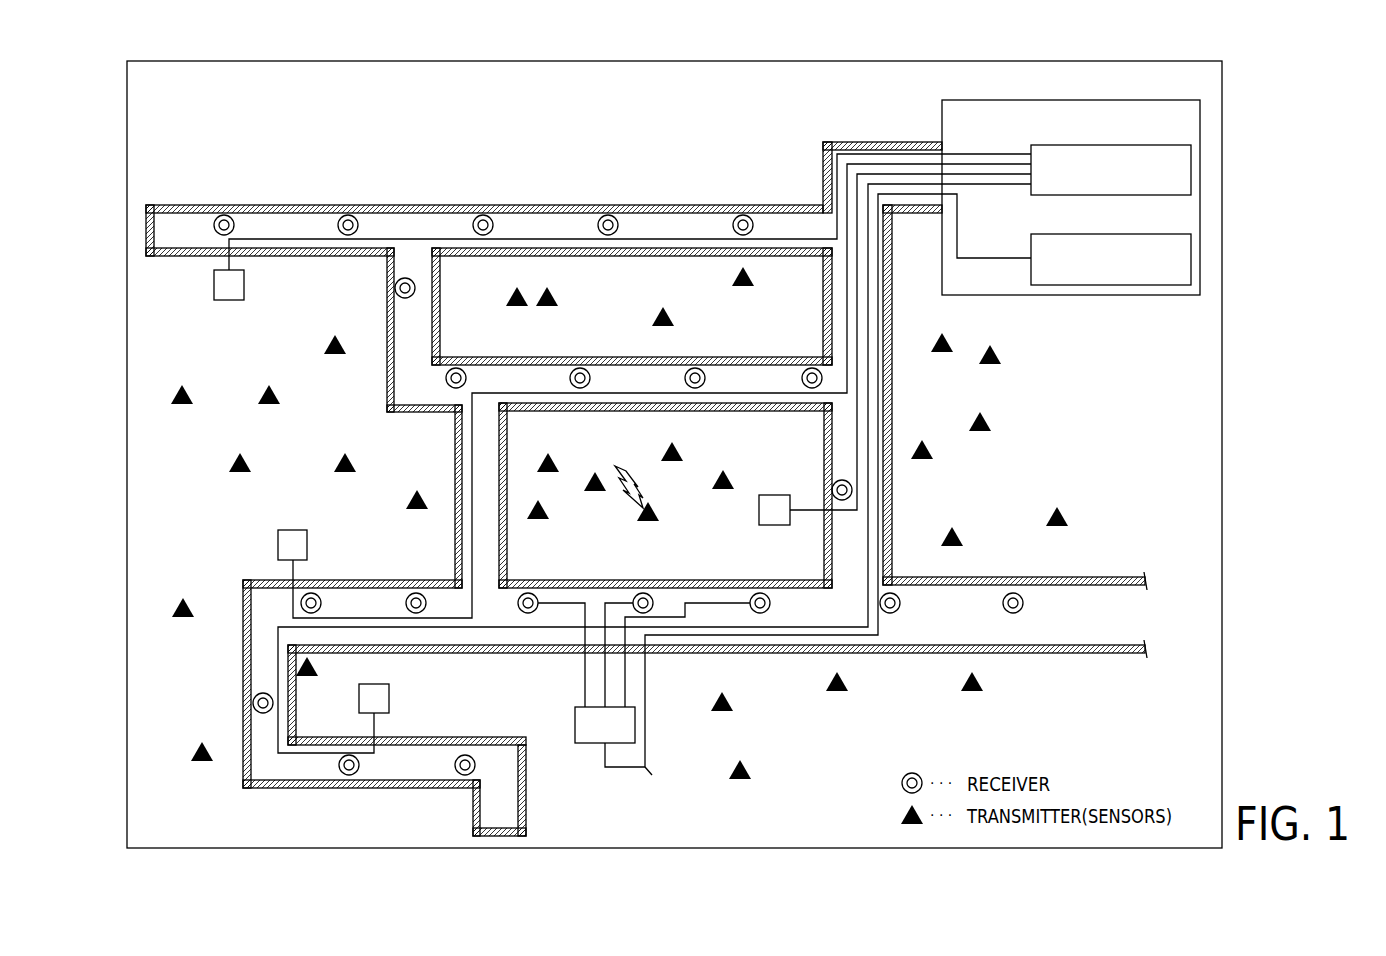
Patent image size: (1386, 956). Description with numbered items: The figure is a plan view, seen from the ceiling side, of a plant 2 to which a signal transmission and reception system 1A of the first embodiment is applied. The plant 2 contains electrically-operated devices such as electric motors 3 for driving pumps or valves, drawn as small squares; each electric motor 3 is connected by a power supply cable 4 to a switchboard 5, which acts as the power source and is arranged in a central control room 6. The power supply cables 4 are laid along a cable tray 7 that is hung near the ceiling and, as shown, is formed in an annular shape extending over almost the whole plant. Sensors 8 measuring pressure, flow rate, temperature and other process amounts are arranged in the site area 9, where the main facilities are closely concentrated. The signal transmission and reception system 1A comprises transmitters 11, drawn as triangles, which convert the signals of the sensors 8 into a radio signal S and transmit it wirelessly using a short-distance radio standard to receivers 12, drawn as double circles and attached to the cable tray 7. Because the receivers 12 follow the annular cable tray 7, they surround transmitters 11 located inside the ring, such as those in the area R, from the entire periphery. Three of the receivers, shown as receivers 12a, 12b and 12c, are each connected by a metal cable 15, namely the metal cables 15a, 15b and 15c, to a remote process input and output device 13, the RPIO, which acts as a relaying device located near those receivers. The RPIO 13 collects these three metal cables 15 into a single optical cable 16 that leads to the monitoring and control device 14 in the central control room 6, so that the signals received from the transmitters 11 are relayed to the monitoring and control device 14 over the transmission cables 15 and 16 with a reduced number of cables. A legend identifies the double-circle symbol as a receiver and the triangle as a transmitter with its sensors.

The signal transmission and reception system 1A is at (653, 776).
The plant 2 is at (1133, 61).
The electric motor 3 is at (244, 287).
The power supply cable 4 is at (963, 166).
The switchboard 5 is at (1133, 145).
The central control room 6 is at (1133, 100).
The cable tray 7 is at (430, 205).
The sensor 8 is at (668, 313).
The site area 9 is at (695, 520).
The transmitter 11 is at (838, 729).
The receiver 12 is at (654, 572).
The receiver 12a is at (531, 592).
The receiver 12b is at (643, 592).
The receiver 12c is at (760, 592).
The remote process input and output device 13 is at (575, 725).
The monitoring and control device 14 is at (1133, 234).
The metal cable 15 is at (614, 658).
The metal cable 15a is at (585, 697).
The metal cable 15b is at (605, 670).
The metal cable 15c is at (625, 670).
The optical cable 16 is at (975, 258).
The area R is at (632, 318).
The radio signal S is at (620, 469).